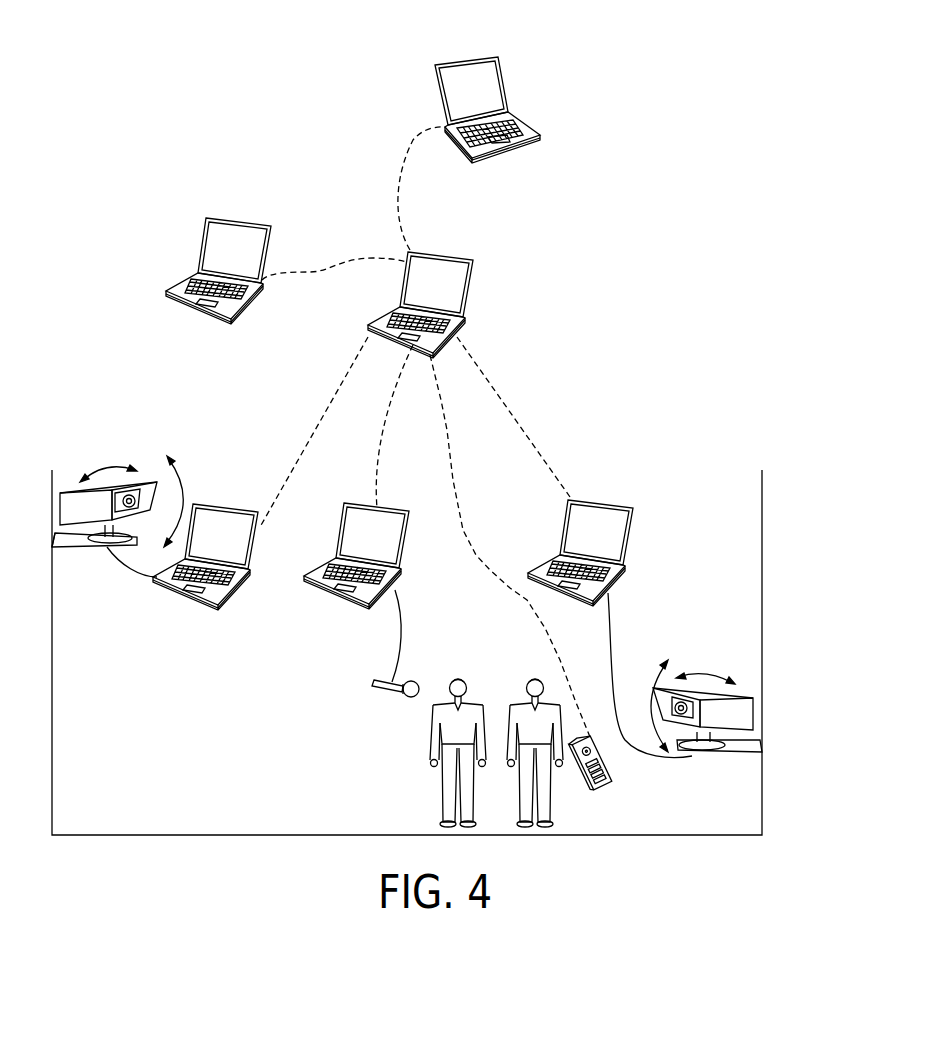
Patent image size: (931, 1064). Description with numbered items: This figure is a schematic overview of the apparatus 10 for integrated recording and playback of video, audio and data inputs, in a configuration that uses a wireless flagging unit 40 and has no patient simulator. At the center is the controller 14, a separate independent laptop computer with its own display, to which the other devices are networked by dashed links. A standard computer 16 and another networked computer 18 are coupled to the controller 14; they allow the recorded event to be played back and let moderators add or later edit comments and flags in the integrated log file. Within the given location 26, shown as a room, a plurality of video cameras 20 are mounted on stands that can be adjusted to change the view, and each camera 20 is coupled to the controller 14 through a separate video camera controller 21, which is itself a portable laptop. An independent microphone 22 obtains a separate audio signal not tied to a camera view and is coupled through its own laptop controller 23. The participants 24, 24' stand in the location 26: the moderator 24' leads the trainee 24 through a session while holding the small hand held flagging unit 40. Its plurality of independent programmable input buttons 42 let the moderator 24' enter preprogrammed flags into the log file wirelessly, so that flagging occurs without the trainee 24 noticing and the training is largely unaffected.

The apparatus 10 is at (750, 82).
The controller 14 is at (445, 302).
The standard computer 16 is at (248, 308).
The networked computer 18 is at (525, 145).
The video camera 20 is at (62, 493).
The video camera controller 21 is at (210, 505).
The microphone 22 is at (403, 680).
The controller 23 is at (313, 590).
The participant 24 is at (428, 753).
The moderator 24' is at (527, 732).
The location 26 is at (763, 523).
The wireless flagging unit 40 is at (605, 757).
The programmable input buttons 42 is at (583, 773).